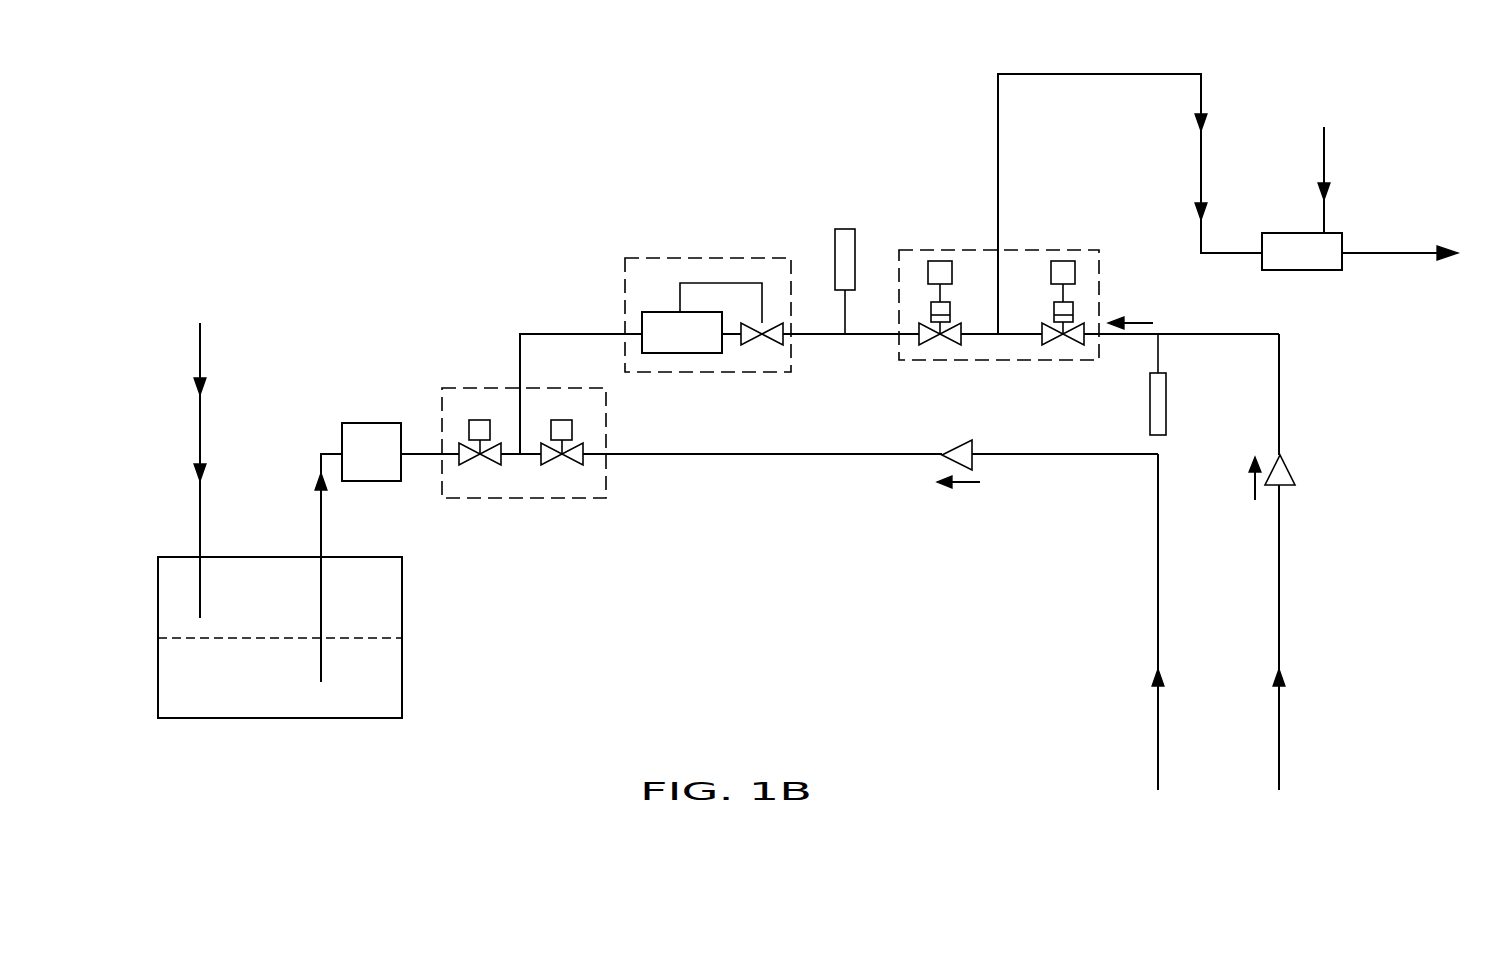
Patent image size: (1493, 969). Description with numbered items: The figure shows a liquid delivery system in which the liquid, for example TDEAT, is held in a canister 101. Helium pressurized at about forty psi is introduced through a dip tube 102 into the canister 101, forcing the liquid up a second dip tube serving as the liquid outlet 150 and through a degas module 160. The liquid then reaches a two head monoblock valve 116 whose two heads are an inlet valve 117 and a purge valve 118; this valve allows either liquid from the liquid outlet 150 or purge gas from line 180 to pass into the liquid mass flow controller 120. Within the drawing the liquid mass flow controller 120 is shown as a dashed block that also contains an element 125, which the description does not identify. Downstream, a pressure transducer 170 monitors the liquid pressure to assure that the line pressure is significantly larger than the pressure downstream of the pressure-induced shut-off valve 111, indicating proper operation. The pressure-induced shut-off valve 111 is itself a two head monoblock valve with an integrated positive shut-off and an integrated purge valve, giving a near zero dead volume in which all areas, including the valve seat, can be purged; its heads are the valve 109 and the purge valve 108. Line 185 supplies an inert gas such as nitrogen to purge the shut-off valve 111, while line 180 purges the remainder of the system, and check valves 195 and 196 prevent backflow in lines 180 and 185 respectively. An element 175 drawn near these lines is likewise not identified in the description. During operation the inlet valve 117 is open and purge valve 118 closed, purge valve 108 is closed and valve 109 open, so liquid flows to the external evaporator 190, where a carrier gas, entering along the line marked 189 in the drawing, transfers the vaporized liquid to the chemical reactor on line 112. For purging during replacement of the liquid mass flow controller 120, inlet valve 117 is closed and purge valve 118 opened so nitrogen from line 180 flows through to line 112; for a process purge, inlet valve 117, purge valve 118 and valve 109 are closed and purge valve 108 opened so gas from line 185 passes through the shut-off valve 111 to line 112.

The canister 101 is at (388, 665).
The dip tube 102 is at (200, 433).
The dip tube (liquid outlet) 150 is at (318, 532).
The degas module 160 is at (375, 438).
The two head monoblock valve 116 is at (555, 487).
The inlet valve 117 is at (480, 458).
The purge valve 118 is at (565, 458).
The liquid mass flow controller (LFC) 120 is at (650, 268).
The flow control valve 125 is at (760, 340).
The pressure transducer 170 is at (833, 263).
The pressure-induced shut-off valve 111 is at (985, 268).
The valve 109 is at (948, 338).
The purge valve 108 is at (1053, 340).
The sensor 175 is at (1166, 402).
The check valve 195 is at (965, 440).
The check valve 196 is at (1295, 472).
The line 180 is at (1158, 613).
The line 185 is at (1279, 613).
The inlet line 189 is at (1344, 180).
The evaporator 190 is at (1295, 270).
The line 112 is at (1400, 253).